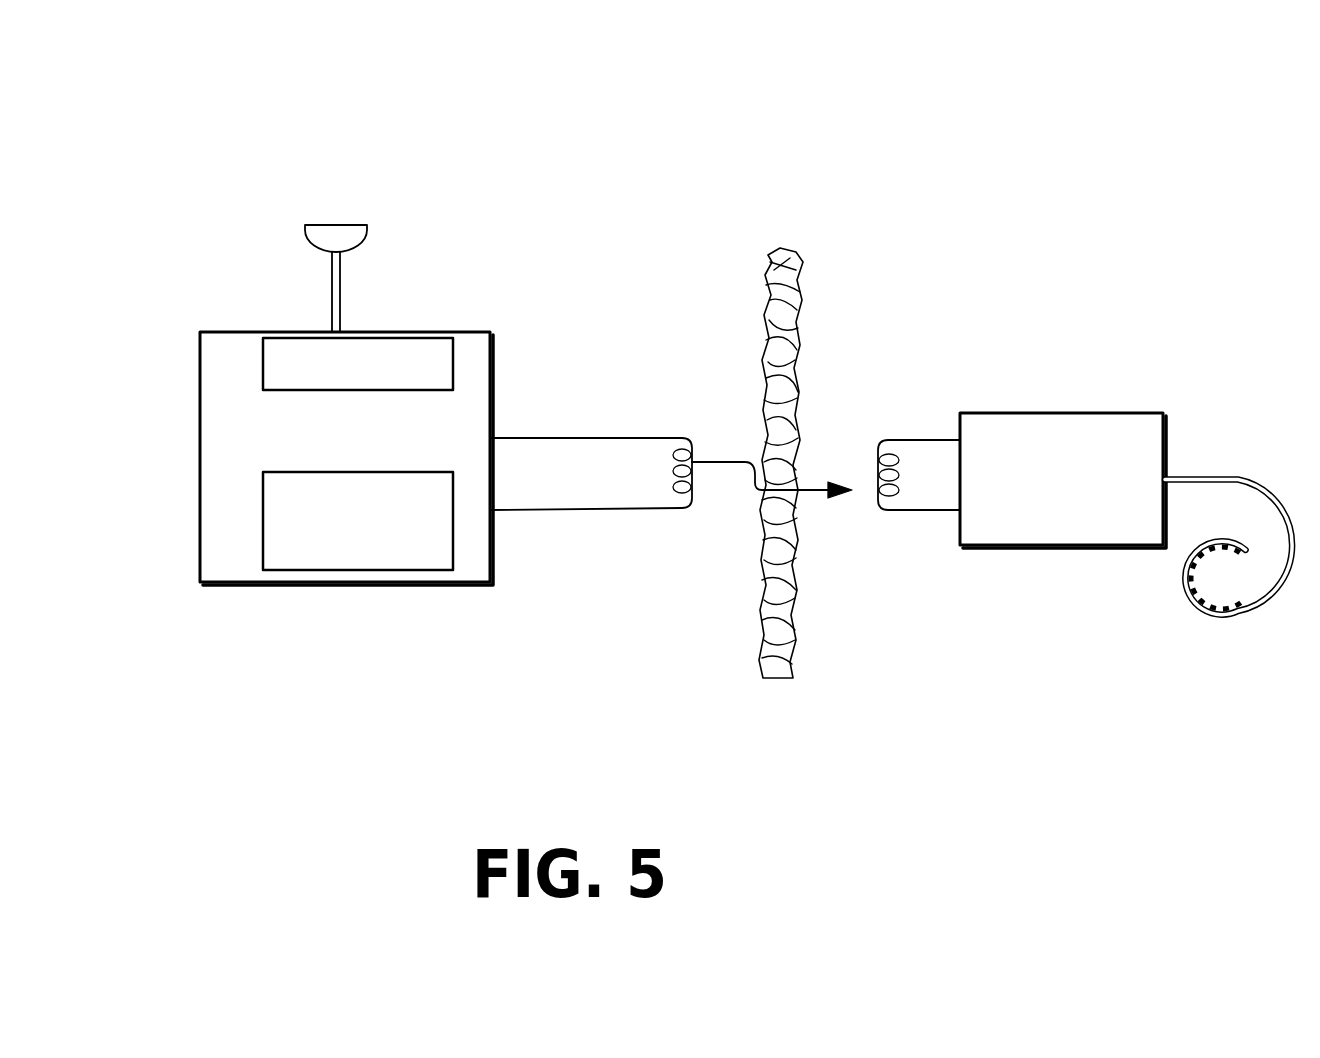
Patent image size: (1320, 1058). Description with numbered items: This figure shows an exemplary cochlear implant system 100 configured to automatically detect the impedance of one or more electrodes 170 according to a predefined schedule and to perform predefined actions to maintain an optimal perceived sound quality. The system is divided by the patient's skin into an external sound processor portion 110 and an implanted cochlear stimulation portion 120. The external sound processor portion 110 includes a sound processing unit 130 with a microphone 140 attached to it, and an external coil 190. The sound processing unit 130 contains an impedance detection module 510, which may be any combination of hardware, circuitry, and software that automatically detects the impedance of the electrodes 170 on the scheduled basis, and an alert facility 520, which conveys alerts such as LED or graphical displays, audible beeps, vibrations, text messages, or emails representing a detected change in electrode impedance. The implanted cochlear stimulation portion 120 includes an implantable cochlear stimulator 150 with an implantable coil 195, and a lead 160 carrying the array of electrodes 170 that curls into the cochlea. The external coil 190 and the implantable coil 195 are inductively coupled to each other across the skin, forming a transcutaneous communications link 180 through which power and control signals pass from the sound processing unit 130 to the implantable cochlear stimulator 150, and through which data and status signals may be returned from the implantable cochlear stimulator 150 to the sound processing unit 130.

The cochlear implant system 100 is at (232, 146).
The external sound processor portion 110 is at (713, 593).
The implanted cochlear stimulation portion 120 is at (1308, 698).
The sound processing unit 130 is at (200, 427).
The microphone 140 is at (337, 225).
The implantable cochlear stimulator 150 is at (1078, 413).
The lead 160 is at (1270, 605).
The electrodes 170 is at (1197, 598).
The communications link 180 is at (808, 490).
The external coil 190 is at (685, 508).
The implantable coil 195 is at (890, 510).
The impedance detection module 510 is at (453, 520).
The alert facility 520 is at (263, 338).